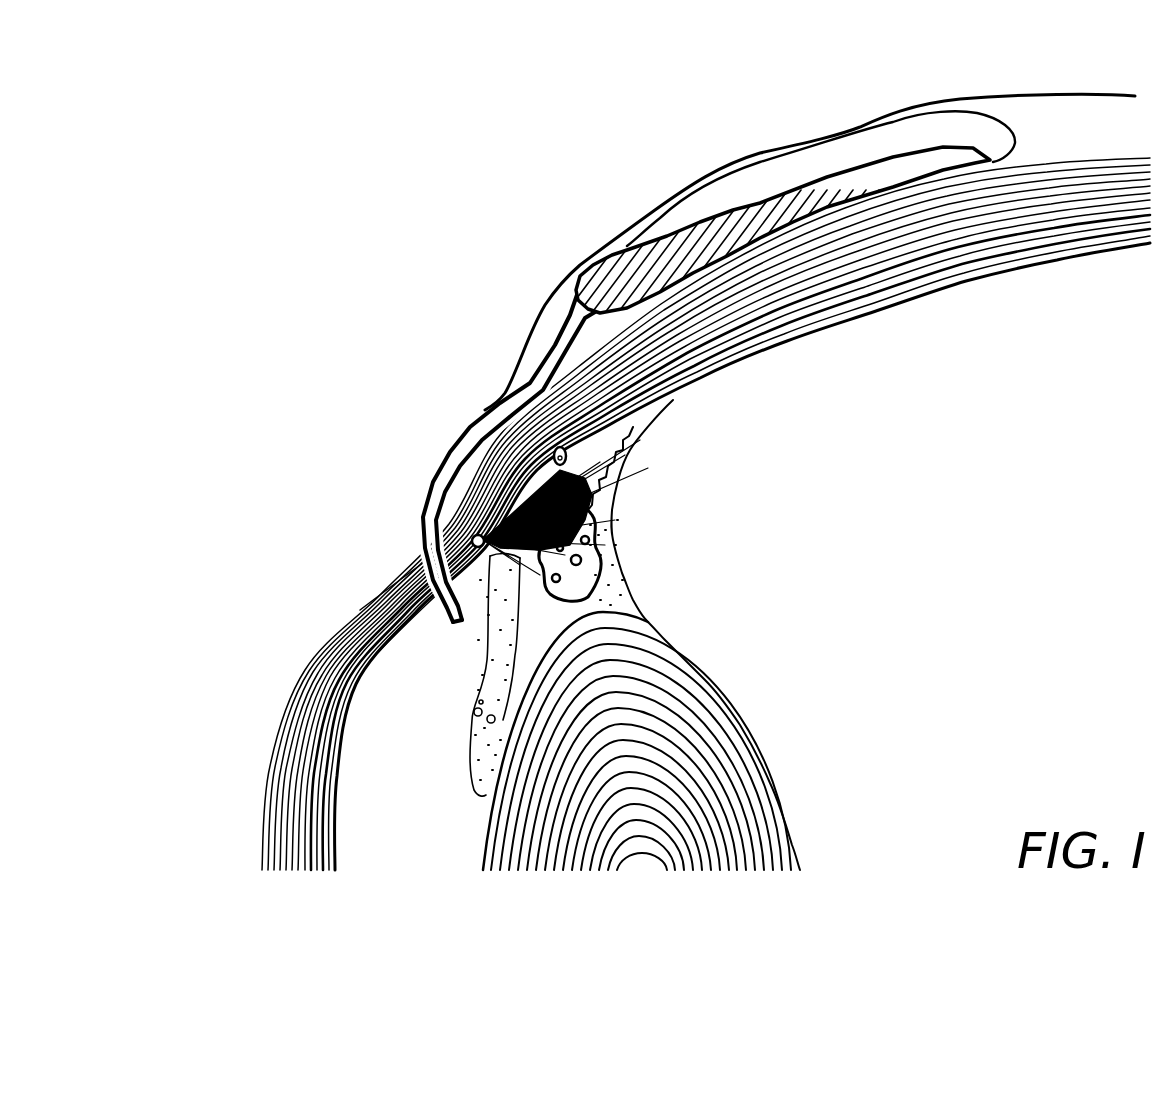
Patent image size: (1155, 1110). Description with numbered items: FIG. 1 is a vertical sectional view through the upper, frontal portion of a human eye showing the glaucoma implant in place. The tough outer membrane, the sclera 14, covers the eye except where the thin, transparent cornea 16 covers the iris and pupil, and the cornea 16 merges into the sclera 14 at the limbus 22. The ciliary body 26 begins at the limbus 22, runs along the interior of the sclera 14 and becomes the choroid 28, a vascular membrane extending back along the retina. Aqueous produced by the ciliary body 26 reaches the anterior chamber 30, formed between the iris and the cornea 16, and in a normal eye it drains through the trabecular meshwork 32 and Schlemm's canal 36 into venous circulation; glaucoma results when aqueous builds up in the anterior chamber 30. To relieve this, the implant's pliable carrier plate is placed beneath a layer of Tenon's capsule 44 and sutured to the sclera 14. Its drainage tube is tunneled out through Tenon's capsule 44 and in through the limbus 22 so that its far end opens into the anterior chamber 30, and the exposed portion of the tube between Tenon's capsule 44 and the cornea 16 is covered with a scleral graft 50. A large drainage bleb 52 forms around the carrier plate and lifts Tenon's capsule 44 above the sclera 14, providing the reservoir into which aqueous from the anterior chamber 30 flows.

The sclera 14 is at (1030, 163).
The cornea 16 is at (307, 737).
The limbus 22 is at (410, 570).
The ciliary body 26 is at (615, 477).
The choroid 28 is at (928, 268).
The anterior chamber 30 is at (440, 673).
The trabecular meshwork 32 is at (595, 512).
The Schlemm's canal 36 is at (480, 530).
The Tenon's capsule 44 is at (745, 155).
The scleral graft 50 is at (480, 418).
The drainage bleb 52 is at (957, 112).